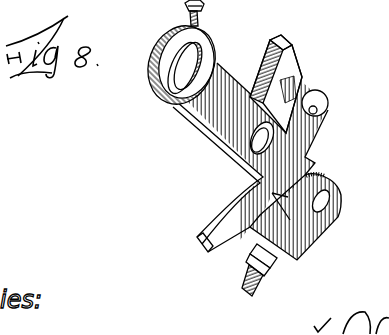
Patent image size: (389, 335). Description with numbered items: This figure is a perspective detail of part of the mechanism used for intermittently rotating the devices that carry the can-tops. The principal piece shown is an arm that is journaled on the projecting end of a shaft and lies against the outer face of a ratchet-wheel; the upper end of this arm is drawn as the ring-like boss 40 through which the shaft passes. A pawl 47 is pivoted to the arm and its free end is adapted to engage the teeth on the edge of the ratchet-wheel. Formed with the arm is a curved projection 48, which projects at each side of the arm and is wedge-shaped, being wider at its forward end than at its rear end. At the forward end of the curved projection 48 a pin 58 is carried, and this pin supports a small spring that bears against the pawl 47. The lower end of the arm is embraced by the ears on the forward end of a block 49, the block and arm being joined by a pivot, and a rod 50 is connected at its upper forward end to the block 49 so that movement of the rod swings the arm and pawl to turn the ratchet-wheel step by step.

The ring boss 40 is at (214, 80).
The pawl 47 is at (287, 68).
The curved projection 48 is at (237, 213).
The block 49 is at (300, 238).
The rod 50 is at (258, 285).
The pin 58 is at (318, 108).